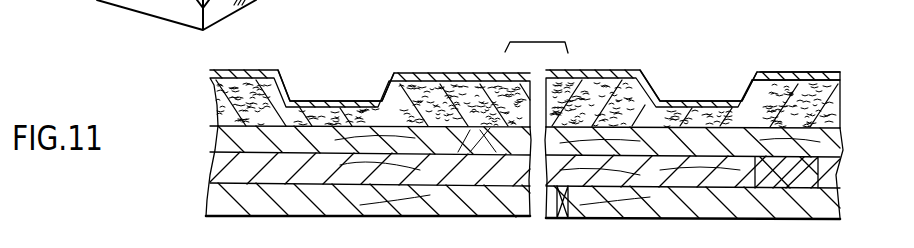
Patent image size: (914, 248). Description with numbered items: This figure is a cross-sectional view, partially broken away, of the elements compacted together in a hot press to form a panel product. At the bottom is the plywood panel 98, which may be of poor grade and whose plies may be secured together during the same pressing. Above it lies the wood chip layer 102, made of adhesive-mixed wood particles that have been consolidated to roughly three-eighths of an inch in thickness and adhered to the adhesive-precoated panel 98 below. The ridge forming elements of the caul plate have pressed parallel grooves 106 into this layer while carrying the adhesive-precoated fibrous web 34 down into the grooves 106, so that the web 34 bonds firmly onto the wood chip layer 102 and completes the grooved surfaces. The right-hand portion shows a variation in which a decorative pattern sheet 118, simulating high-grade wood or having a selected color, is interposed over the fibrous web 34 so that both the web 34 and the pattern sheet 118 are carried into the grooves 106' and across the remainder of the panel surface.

The plywood panel 98 is at (203, 125).
The wood chip layer 102 is at (218, 112).
The fibrous web 34 is at (460, 76).
The grooves 106 is at (336, 59).
The grooves 106' is at (698, 61).
The decorative pattern sheet 118 is at (812, 73).